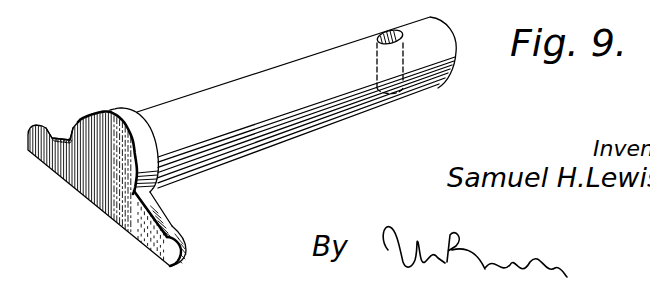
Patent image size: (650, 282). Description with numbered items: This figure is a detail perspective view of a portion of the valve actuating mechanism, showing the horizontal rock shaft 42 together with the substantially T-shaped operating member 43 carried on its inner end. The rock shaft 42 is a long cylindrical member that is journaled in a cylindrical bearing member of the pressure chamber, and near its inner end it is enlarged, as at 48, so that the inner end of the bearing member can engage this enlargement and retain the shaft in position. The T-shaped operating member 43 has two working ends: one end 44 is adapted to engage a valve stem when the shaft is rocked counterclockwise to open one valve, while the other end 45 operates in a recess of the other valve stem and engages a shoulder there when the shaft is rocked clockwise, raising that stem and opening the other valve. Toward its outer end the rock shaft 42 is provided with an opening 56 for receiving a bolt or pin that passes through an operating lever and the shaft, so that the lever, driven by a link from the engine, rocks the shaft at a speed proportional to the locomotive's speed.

The horizontal rock shaft 42 is at (303, 59).
The T-shaped operating member 43 is at (95, 193).
The end of T-shaped member 44 is at (45, 126).
The other end of T-shaped member 45 is at (182, 242).
The enlarged end of rock shaft 48 is at (125, 115).
The opening in rock shaft 56 is at (389, 30).